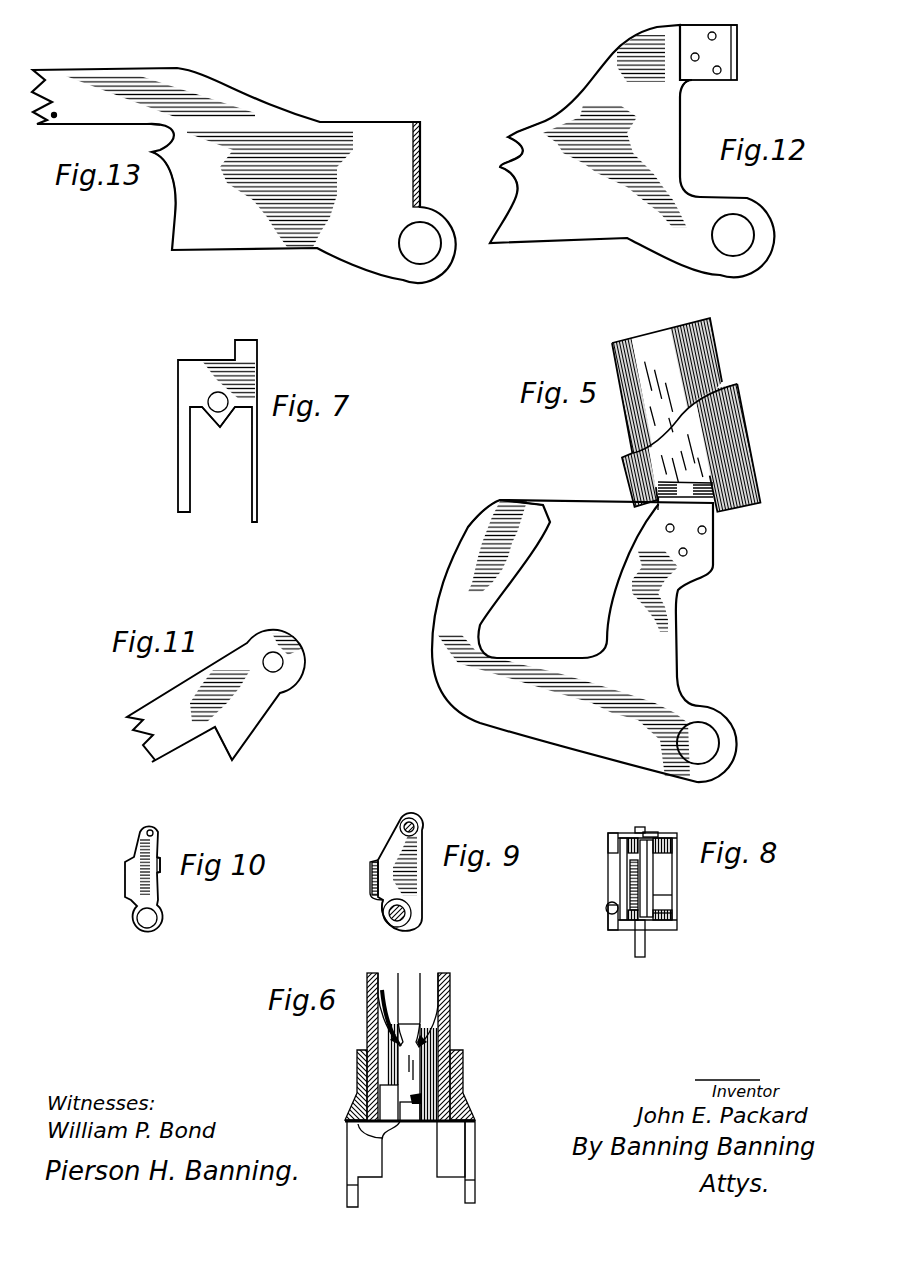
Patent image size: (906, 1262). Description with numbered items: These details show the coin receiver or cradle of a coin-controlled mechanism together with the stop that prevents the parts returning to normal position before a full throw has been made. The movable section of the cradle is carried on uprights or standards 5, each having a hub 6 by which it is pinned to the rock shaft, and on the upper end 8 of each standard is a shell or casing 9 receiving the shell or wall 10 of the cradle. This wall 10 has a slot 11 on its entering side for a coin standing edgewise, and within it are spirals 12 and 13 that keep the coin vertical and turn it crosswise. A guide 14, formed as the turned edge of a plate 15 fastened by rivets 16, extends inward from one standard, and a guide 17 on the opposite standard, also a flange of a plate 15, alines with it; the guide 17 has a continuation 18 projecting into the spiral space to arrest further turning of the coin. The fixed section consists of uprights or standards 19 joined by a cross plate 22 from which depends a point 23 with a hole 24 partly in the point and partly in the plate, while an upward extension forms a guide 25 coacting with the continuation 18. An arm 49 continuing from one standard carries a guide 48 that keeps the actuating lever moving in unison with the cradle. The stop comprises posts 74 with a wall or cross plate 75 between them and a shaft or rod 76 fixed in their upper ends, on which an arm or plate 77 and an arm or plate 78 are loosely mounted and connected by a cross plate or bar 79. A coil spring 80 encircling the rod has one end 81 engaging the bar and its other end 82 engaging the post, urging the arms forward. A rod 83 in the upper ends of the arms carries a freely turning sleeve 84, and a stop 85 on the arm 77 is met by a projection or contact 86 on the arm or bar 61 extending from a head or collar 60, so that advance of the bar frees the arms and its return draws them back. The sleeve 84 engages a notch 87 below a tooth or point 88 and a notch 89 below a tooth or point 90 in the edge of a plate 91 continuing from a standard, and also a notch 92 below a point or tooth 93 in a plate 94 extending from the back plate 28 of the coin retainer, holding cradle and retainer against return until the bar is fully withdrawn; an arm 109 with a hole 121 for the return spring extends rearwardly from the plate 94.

In FIG. 12, the uprights or standards 5 is at (666, 137).
In FIG. 5, the uprights or standards 5 is at (655, 605).
In FIG. 6, the uprights or standards 5 is at (347, 1190).
In FIG. 12, the hub 6 is at (740, 235).
In FIG. 5, the hub 6 is at (710, 737).
In FIG. 12, the upper end 8 is at (677, 74).
In FIG. 5, the upper end 8 is at (685, 528).
In FIG. 6, the upper end 8 is at (478, 1162).
In FIG. 5, the shell or casing 9 is at (687, 456).
In FIG. 6, the shell or casing 9 is at (357, 1068).
In FIG. 5, the shell or wall 10 is at (677, 384).
In FIG. 6, the shell or wall 10 is at (422, 1047).
In FIG. 6, the slot 11 is at (405, 985).
In FIG. 6, the spiral 12 is at (432, 1032).
In FIG. 6, the spiral 13 is at (390, 1014).
In FIG. 12, the guide 14 is at (737, 45).
In FIG. 6, the guide 14 is at (451, 1149).
In FIG. 12, the plate 15 is at (697, 28).
In FIG. 12, the rivets 16 is at (709, 53).
In FIG. 5, the rivets 16 is at (674, 530).
In FIG. 6, the guide 17 is at (373, 1164).
In FIG. 6, the continuation 18 is at (390, 1103).
In FIG. 7, the uprights or standards 19 is at (186, 476).
In FIG. 7, the cross plate 22 is at (221, 381).
In FIG. 7, the point 23 is at (222, 428).
In FIG. 7, the hole 24 is at (225, 397).
In FIG. 7, the guide 25 is at (253, 345).
In FIG. 13, the back plate 28 is at (414, 165).
In FIG. 5, the guide 48 is at (495, 557).
In FIG. 5, the arm 49 is at (584, 639).
In FIG. 11, the head or collar 60 is at (297, 662).
In FIG. 11, the arm or bar 61 is at (216, 696).
In FIG. 8, the posts 74 is at (672, 848).
In FIG. 8, the wall or cross plate 75 is at (672, 895).
In FIG. 10, the shaft or rod 76 is at (143, 920).
In FIG. 9, the shaft or rod 76 is at (392, 922).
In FIG. 8, the shaft or rod 76 is at (643, 827).
In FIG. 10, the arm or plate 77 is at (126, 870).
In FIG. 8, the arm or plate 77 is at (672, 913).
In FIG. 9, the arm or plate 78 is at (422, 873).
In FIG. 8, the arm or plate 78 is at (668, 834).
In FIG. 9, the cross plate or bar 79 is at (372, 867).
In FIG. 8, the cross plate or bar 79 is at (620, 878).
In FIG. 9, the coil spring 80 is at (410, 908).
In FIG. 8, the coil spring 80 is at (630, 885).
In FIG. 9, the end 81 is at (371, 890).
In FIG. 8, the end 81 is at (612, 855).
In FIG. 8, the end 82 is at (610, 914).
In FIG. 10, the rod 83 is at (153, 832).
In FIG. 9, the rod 83 is at (415, 823).
In FIG. 8, the rod 83 is at (655, 832).
In FIG. 9, the sleeve 84 is at (422, 833).
In FIG. 8, the sleeve 84 is at (647, 875).
In FIG. 10, the stop 85 is at (160, 868).
In FIG. 8, the stop 85 is at (645, 940).
In FIG. 11, the projection or contact 86 is at (231, 739).
In FIG. 12, the notch 87 is at (529, 150).
In FIG. 12, the tooth or point 88 is at (518, 132).
In FIG. 12, the notch 89 is at (505, 184).
In FIG. 12, the tooth or point 90 is at (498, 171).
In FIG. 12, the plate 91 is at (632, 151).
In FIG. 13, the notch 92 is at (159, 183).
In FIG. 13, the point or tooth 93 is at (152, 149).
In FIG. 13, the plate 94 is at (244, 175).
In FIG. 13, the arm 109 is at (103, 110).
In FIG. 13, the hole 121 is at (57, 113).